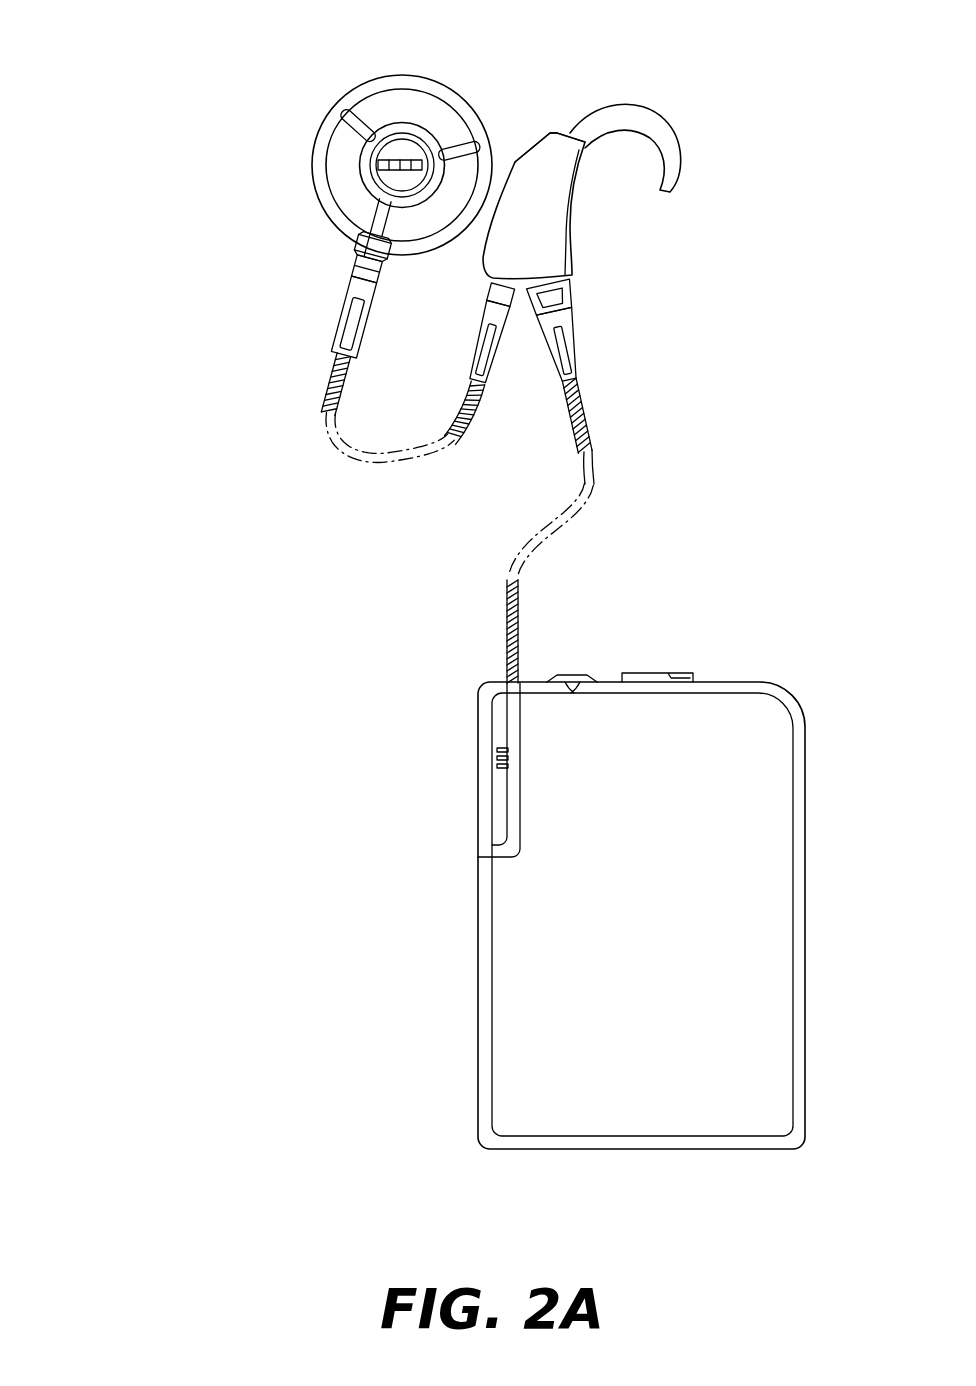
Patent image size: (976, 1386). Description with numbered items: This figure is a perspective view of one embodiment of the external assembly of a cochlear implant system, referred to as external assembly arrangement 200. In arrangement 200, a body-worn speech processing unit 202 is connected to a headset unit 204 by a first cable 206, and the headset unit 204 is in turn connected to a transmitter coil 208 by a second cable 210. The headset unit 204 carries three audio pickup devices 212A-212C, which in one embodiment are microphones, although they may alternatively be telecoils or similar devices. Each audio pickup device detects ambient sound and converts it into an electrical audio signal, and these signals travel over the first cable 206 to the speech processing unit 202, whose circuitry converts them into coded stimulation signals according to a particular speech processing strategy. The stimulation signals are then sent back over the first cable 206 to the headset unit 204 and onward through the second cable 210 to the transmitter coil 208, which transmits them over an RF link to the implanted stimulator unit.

The external assembly arrangement 200 is at (146, 77).
The body-worn speech processing unit 202 is at (805, 841).
The headset unit 204 is at (547, 208).
The first cable 206 is at (583, 510).
The transmitter coil 208 is at (313, 153).
The second cable 210 is at (382, 460).
The audio pickup devices 212A-212C is at (537, 148).